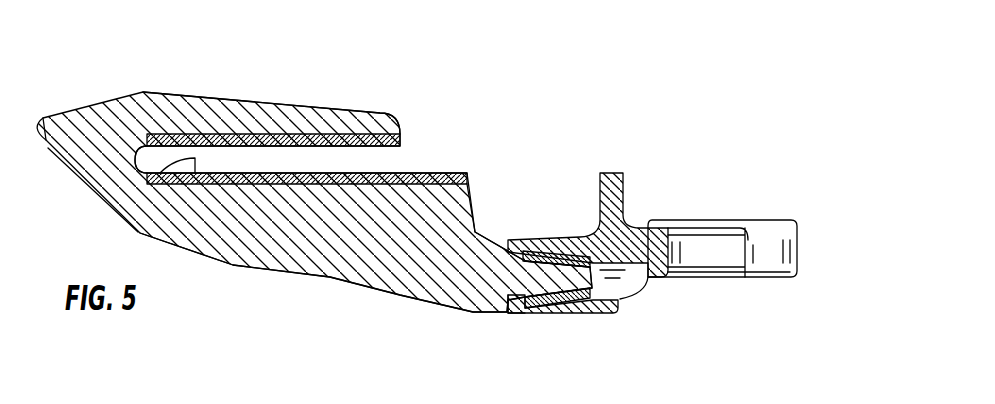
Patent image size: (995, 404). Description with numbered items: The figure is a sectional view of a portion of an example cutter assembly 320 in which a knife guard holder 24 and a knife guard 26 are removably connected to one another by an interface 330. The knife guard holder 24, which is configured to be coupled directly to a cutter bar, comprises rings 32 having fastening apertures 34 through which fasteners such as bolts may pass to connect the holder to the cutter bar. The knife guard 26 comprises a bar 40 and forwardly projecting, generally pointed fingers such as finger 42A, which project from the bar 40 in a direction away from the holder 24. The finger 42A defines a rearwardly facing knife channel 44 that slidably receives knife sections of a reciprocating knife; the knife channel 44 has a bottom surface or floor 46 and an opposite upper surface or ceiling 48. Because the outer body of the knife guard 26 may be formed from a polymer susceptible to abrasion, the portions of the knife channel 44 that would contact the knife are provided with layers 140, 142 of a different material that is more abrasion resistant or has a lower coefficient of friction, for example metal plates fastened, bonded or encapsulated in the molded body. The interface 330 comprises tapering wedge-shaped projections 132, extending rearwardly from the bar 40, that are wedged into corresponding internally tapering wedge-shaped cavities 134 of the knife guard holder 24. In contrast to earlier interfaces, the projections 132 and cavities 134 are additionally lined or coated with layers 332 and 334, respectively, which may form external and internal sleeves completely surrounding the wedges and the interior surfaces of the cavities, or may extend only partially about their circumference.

The cutter assembly 320 is at (276, 52).
The knife guard 26 is at (147, 78).
The finger 42A is at (82, 108).
The ceiling 48 is at (380, 116).
The bar 40 is at (473, 210).
The knife channel 44 is at (223, 158).
The floor 46 is at (350, 168).
The layer 142 is at (308, 150).
The layer 140 is at (295, 176).
The layer 332 is at (523, 275).
The interface 330 is at (534, 214).
The knife guard holder 24 is at (626, 158).
The layer 334 is at (574, 254).
The cavity 134 is at (577, 314).
The projection 132 is at (515, 300).
The fastening aperture 34 is at (737, 218).
The ring 32 is at (783, 240).